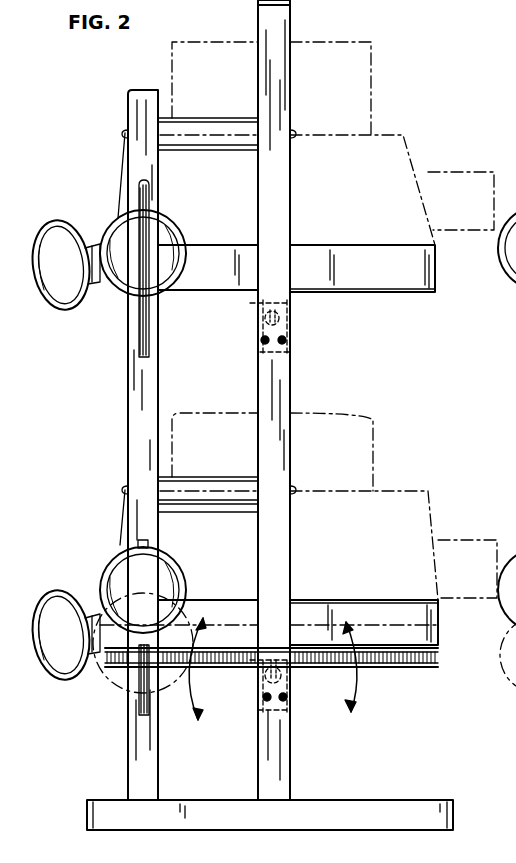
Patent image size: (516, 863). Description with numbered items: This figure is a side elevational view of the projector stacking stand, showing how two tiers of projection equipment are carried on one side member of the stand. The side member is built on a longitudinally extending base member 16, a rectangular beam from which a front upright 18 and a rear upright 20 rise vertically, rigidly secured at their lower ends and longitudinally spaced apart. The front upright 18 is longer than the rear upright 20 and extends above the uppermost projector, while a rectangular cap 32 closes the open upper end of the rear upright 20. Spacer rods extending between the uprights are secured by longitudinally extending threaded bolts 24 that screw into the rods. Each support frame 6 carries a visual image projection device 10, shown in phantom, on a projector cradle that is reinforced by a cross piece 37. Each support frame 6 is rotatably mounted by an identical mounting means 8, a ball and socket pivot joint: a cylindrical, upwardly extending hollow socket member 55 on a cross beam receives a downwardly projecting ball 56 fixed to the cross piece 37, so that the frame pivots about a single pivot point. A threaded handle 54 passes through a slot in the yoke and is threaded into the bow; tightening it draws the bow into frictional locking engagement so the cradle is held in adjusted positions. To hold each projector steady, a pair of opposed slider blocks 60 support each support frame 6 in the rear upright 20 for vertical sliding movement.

The support frame 6 is at (507, 577).
The mounting means 8 is at (300, 343).
The visual image projection device 10 is at (403, 152).
The base member 16 is at (410, 830).
The front upright 18 is at (290, 757).
The rear upright 20 is at (158, 766).
The threaded bolt 24 is at (472, 175).
The rectangular cap 32 is at (132, 90).
The cross piece 37 is at (292, 285).
The threaded handle 54 is at (70, 306).
The socket member 55 is at (290, 303).
The ball 56 is at (262, 310).
The slider block 60 is at (506, 654).